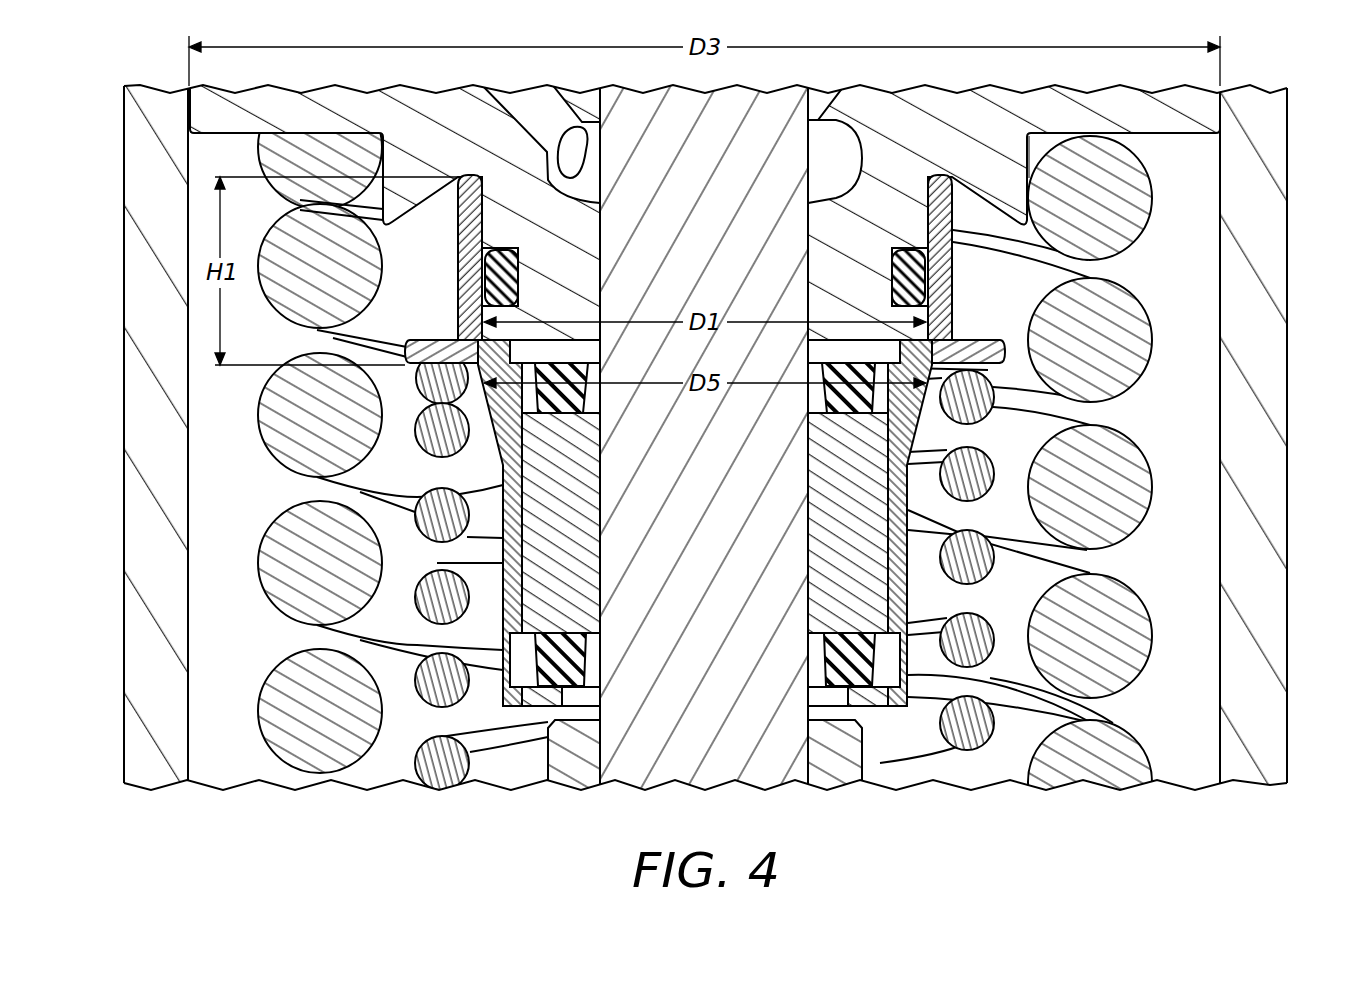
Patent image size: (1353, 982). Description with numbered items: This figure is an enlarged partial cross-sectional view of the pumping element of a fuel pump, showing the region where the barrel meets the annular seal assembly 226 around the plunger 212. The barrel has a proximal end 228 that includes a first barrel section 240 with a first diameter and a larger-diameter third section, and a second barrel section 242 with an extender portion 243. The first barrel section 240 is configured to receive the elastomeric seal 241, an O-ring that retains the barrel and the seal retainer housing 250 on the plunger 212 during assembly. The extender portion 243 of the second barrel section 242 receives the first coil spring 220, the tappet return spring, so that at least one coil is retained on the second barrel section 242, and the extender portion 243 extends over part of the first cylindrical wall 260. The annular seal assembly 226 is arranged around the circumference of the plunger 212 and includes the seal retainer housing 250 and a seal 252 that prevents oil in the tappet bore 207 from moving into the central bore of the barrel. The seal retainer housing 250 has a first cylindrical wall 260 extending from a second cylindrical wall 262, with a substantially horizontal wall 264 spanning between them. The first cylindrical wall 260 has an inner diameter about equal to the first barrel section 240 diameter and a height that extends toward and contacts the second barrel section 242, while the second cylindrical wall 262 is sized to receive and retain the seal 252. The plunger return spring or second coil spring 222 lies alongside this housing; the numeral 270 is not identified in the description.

The tappet bore 207 is at (1195, 665).
The plunger 212 is at (698, 712).
The first coil spring 220 is at (1120, 525).
The second coil spring 222 is at (977, 480).
The annular seal assembly 226 is at (226, 492).
The proximal end 228 is at (585, 330).
The first barrel section 240 is at (930, 345).
The elastomeric seal 241 is at (918, 272).
The second barrel section 242 is at (1033, 178).
The extender portion 243 is at (1030, 232).
The seal retainer housing 250 is at (493, 428).
The seal 252 is at (548, 538).
The first cylindrical wall 260 is at (470, 233).
The second cylindrical wall 262 is at (903, 582).
The substantially horizontal wall 264 is at (903, 353).
The seal 270 is at (565, 402).